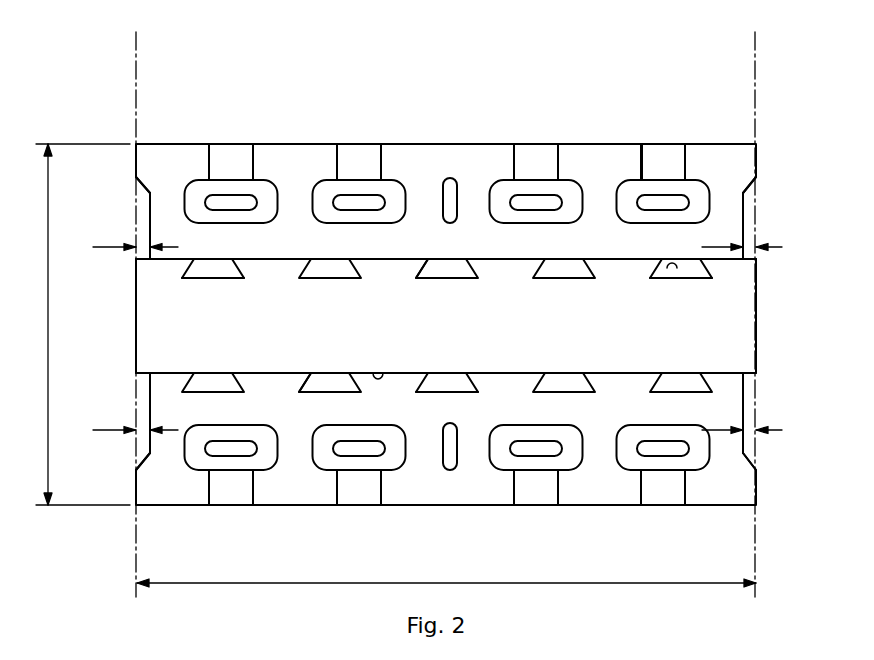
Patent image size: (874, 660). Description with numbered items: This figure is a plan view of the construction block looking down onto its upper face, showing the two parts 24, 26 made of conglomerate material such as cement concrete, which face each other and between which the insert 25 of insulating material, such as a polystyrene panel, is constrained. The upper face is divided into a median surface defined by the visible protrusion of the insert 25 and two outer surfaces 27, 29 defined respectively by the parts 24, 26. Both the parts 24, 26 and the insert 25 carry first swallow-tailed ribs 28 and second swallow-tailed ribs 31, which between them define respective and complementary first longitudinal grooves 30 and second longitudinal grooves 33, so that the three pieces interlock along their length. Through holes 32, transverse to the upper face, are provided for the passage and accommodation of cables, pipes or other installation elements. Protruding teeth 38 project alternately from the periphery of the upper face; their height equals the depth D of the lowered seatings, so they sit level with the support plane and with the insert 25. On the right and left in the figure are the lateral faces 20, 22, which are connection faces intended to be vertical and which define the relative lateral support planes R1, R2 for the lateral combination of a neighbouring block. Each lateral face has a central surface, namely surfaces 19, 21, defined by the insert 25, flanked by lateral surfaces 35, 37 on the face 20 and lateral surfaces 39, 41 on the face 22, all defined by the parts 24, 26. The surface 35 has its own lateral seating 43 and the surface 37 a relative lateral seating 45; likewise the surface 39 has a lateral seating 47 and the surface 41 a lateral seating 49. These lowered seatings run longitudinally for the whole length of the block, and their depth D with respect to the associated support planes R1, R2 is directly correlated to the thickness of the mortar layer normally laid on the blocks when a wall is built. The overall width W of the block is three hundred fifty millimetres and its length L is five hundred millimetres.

The surface 19 is at (757, 318).
The lateral face 20 is at (758, 352).
The surface 21 is at (136, 303).
The lateral face 22 is at (136, 337).
The part 24 is at (292, 505).
The insert 25 is at (762, 283).
The part 26 is at (277, 141).
The surface 27 is at (477, 463).
The first swallow-tailed rib 28 is at (515, 263).
The surface 29 is at (420, 178).
The first longitudinal groove 30 is at (672, 268).
The second swallow-tailed rib 31 is at (211, 266).
The through hole 32 is at (350, 210).
The second longitudinal groove 33 is at (490, 265).
The lateral surface 35 is at (760, 228).
The lateral surface 37 is at (758, 415).
The protruding tooth 38 is at (537, 160).
The lateral surface 39 is at (136, 226).
The lateral surface 41 is at (136, 410).
The lateral seating 43 is at (753, 204).
The lateral seating 45 is at (745, 450).
The lateral seating 47 is at (148, 195).
The lateral seating 49 is at (148, 447).
The width W is at (74, 324).
The length L is at (446, 573).
The depth D is at (437, 325).
The lateral support plane R1 is at (754, 68).
The lateral support plane R2 is at (135, 70).